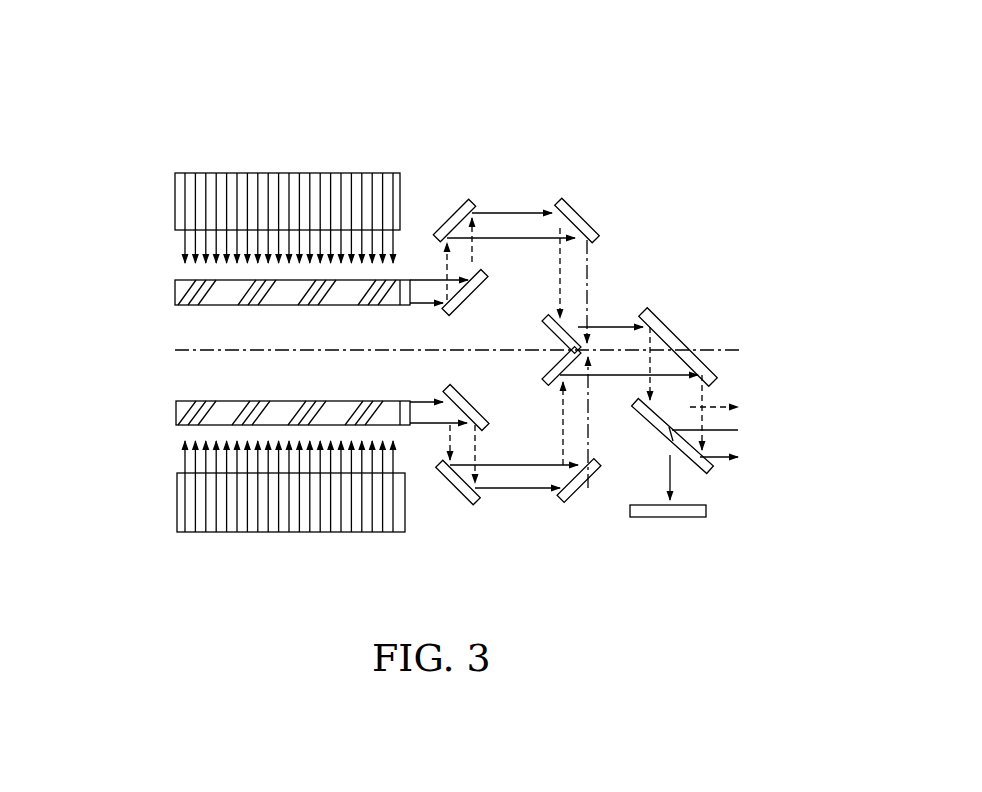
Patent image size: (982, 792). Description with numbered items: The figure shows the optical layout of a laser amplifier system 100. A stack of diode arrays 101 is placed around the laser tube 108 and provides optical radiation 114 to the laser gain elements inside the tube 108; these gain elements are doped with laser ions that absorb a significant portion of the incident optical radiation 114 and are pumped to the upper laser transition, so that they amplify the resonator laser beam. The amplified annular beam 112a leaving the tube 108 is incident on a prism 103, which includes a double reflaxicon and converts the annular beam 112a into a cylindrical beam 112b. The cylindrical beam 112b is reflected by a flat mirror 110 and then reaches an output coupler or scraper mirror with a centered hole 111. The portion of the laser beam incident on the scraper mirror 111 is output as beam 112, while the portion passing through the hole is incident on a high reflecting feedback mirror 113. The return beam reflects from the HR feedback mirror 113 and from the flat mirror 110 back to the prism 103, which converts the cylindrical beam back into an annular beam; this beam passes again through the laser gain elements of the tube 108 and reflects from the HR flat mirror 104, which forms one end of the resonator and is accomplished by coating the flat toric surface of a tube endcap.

The laser amplifier system 100 is at (233, 557).
The diode arrays 101 is at (308, 183).
The prism 103 is at (585, 325).
The high reflecting flat mirror 104 is at (176, 410).
The tube 108 is at (200, 280).
The flat mirror 110 is at (690, 325).
The output coupler flat mirror or scraper mirror with a centered hole 111 is at (708, 470).
The output beam 112 is at (708, 397).
The annular beam 112a is at (422, 267).
The cylindrical beam 112b is at (625, 318).
The HR feedback mirror 113 is at (630, 510).
The optical radiation 114 is at (248, 220).